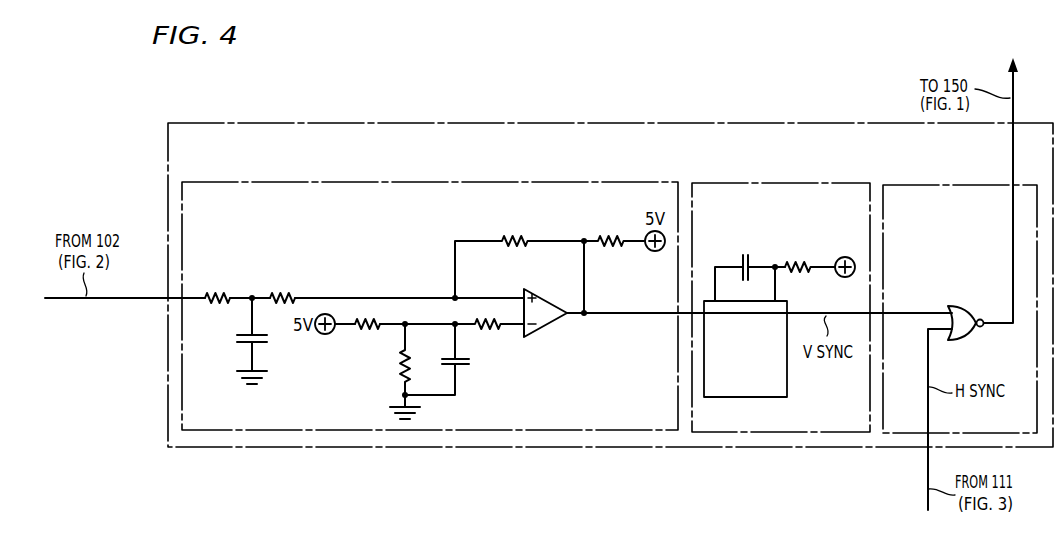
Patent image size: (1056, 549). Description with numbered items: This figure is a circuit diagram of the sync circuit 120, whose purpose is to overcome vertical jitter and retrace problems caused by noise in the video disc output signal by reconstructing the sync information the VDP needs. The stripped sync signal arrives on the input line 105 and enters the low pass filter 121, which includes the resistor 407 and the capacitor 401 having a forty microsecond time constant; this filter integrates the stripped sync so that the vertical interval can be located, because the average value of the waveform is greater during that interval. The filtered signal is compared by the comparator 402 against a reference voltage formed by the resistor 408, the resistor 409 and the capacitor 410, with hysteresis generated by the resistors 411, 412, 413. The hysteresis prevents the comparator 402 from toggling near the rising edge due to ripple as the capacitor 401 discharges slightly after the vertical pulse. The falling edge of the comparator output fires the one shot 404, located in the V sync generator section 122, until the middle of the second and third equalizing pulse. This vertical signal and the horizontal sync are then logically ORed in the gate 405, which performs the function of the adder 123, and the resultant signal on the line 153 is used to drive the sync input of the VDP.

The sync circuit 120 is at (535, 122).
The low pass filter 121 is at (440, 181).
The V sync generator 122 is at (739, 182).
The adder 123 is at (929, 184).
The input line from 102 105 is at (75, 300).
The line 153 is at (1010, 153).
The capacitor 401 is at (240, 340).
The comparator 402 is at (551, 301).
The one shot 404 is at (787, 389).
The gate 405 is at (968, 305).
The resistor 407 is at (215, 292).
The resistor 408 is at (361, 328).
The resistor 409 is at (395, 368).
The capacitor 410 is at (464, 368).
The resistor 411 is at (512, 237).
The resistor 412 is at (282, 292).
The resistor 413 is at (497, 328).